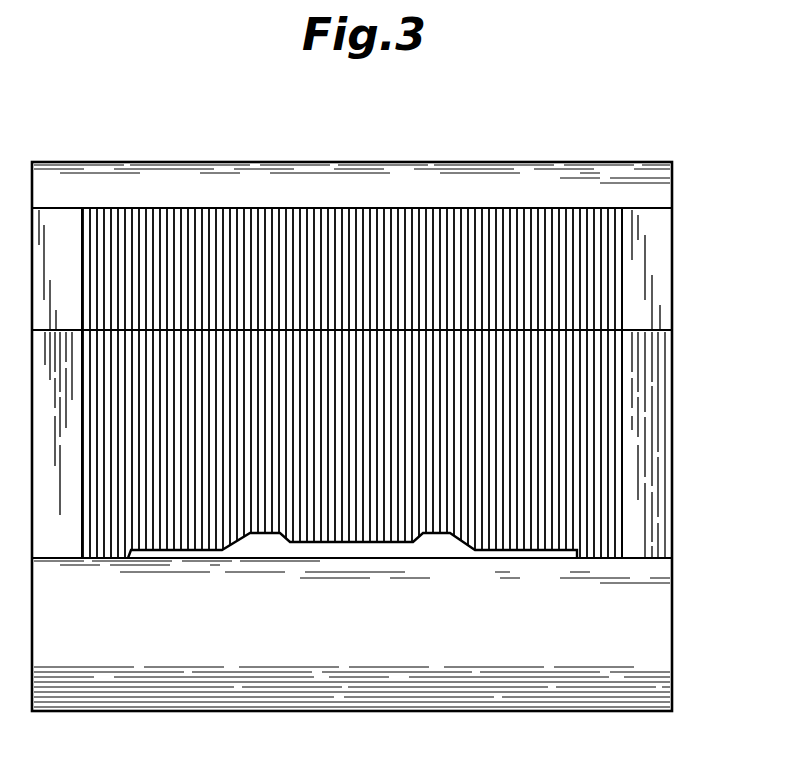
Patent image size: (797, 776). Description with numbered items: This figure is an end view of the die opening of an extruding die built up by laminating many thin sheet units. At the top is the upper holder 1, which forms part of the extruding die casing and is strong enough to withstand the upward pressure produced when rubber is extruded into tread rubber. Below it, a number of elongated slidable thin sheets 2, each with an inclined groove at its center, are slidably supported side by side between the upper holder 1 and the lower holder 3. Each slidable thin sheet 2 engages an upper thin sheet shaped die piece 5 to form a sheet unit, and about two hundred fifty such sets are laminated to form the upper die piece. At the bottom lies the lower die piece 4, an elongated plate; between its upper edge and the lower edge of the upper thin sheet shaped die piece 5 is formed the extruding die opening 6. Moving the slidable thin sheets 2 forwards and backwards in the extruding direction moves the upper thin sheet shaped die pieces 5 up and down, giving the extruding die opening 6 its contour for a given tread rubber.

The upper holder 1 is at (594, 176).
The slidable thin sheet 2 is at (374, 263).
The lower holder 3 is at (653, 382).
The lower die piece 4 is at (645, 623).
The upper thin sheet shaped die piece 5 is at (608, 510).
The extruding die opening 6 is at (451, 543).